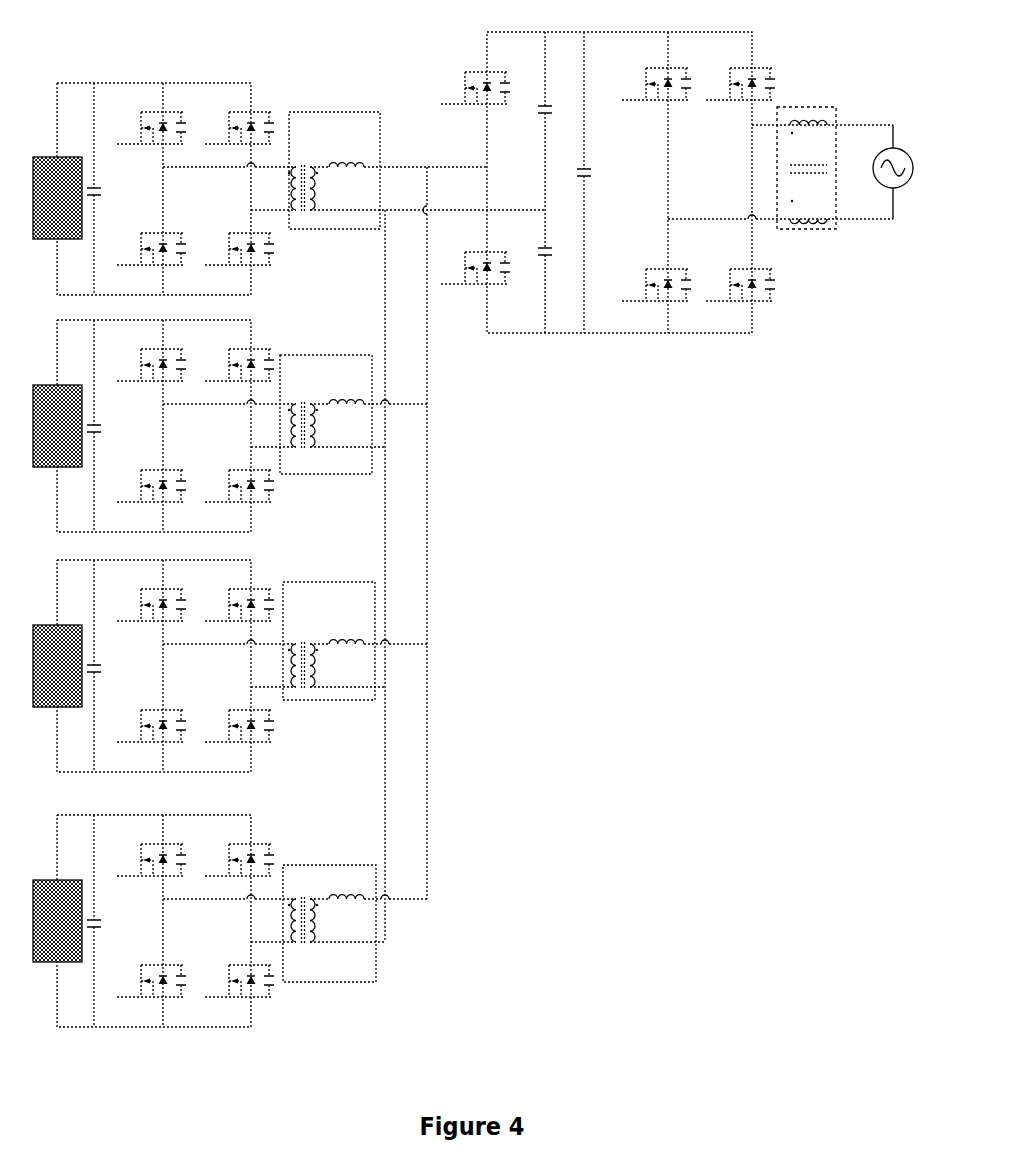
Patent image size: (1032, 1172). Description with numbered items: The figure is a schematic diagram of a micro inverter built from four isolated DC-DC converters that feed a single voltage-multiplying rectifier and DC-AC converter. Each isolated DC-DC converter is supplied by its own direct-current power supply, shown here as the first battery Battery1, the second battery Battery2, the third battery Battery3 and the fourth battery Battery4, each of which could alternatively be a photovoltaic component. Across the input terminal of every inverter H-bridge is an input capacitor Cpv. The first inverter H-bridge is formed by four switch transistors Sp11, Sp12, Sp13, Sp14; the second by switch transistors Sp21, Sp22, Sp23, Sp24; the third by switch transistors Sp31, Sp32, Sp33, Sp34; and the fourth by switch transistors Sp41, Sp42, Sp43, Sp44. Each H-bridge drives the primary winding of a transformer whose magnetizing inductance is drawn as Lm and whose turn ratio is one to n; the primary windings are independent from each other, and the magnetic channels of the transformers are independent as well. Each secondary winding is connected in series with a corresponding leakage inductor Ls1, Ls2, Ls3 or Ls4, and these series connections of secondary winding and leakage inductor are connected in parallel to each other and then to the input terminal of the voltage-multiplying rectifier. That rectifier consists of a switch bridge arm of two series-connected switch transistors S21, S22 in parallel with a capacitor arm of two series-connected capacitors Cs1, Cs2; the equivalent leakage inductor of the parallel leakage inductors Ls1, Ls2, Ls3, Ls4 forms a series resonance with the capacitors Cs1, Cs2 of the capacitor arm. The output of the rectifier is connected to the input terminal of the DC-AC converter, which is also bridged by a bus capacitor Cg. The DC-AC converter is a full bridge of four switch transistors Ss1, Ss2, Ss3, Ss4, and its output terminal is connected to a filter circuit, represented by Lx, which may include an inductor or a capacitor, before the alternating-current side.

The battery Battery1 is at (57, 198).
The battery Battery2 is at (57, 426).
The battery Battery3 is at (57, 666).
The battery Battery4 is at (57, 921).
The input capacitor Cpv is at (107, 549).
The switch transistor Sp11 is at (144, 128).
The switch transistor Sp12 is at (144, 249).
The switch transistor Sp13 is at (235, 128).
The switch transistor Sp14 is at (235, 249).
The switch transistor Sp21 is at (144, 365).
The switch transistor Sp22 is at (144, 486).
The switch transistor Sp23 is at (235, 365).
The switch transistor Sp24 is at (235, 486).
The switch transistor Sp31 is at (144, 605).
The switch transistor Sp32 is at (144, 726).
The switch transistor Sp33 is at (235, 605).
The switch transistor Sp34 is at (235, 726).
The switch transistor Sp41 is at (144, 860).
The switch transistor Sp42 is at (144, 981).
The switch transistor Sp43 is at (235, 860).
The switch transistor Sp44 is at (235, 981).
The transformer magnetizing inductance Lm is at (303, 546).
The leakage inductor Ls1 is at (348, 154).
The leakage inductor Ls2 is at (348, 391).
The leakage inductor Ls3 is at (348, 631).
The leakage inductor Ls4 is at (348, 886).
The switch transistor S21 is at (475, 75).
The switch transistor S22 is at (475, 255).
The capacitor Cs1 is at (559, 113).
The capacitor Cs2 is at (559, 255).
The bus capacitor Cg is at (595, 177).
The switch transistor Ss1 is at (656, 69).
The switch transistor Ss2 is at (656, 271).
The switch transistor Ss3 is at (740, 69).
The switch transistor Ss4 is at (740, 271).
The filter circuit Lx is at (806, 183).